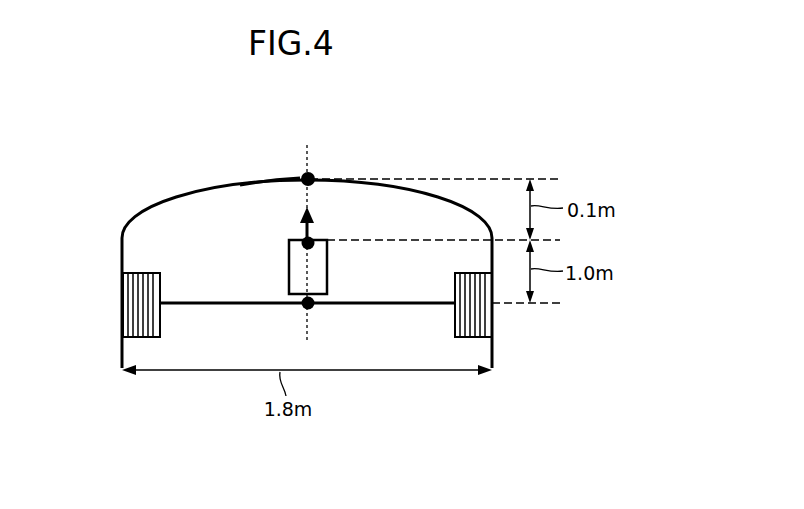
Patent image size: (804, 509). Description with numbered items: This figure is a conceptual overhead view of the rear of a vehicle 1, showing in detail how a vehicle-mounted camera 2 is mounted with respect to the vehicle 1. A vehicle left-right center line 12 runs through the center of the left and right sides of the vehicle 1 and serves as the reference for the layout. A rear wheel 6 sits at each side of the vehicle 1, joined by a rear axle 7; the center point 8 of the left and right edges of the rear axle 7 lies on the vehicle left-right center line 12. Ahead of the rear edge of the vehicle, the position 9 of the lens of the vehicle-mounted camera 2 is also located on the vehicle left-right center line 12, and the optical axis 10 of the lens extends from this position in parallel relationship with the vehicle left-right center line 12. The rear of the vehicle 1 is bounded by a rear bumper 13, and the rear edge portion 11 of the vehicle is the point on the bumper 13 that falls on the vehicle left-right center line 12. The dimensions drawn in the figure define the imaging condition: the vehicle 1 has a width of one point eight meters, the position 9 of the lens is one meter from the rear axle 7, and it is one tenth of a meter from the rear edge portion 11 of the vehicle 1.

The vehicle 1 is at (198, 238).
The vehicle-mounted camera 2 is at (292, 262).
The rear wheel 6 is at (125, 297).
The rear axle 7 is at (243, 305).
The center point 8 is at (310, 308).
The position of the lens 9 is at (314, 238).
The optical axis 10 is at (317, 213).
The rear edge portion 11 is at (310, 178).
The vehicle left-right center line 12 is at (308, 147).
The rear bumper 13 is at (272, 193).